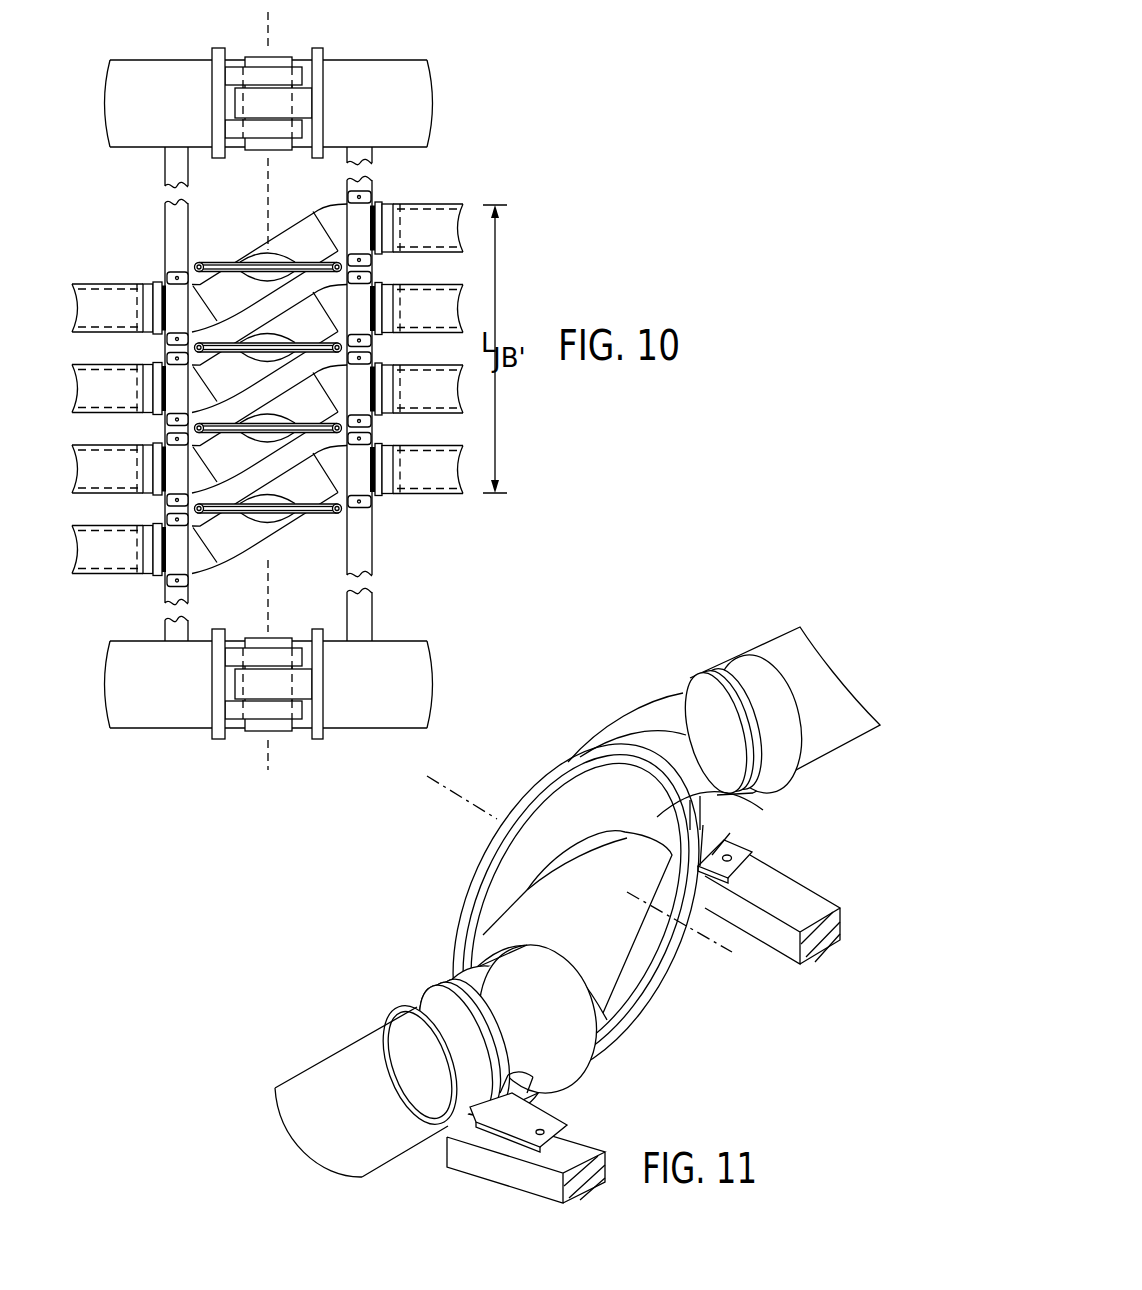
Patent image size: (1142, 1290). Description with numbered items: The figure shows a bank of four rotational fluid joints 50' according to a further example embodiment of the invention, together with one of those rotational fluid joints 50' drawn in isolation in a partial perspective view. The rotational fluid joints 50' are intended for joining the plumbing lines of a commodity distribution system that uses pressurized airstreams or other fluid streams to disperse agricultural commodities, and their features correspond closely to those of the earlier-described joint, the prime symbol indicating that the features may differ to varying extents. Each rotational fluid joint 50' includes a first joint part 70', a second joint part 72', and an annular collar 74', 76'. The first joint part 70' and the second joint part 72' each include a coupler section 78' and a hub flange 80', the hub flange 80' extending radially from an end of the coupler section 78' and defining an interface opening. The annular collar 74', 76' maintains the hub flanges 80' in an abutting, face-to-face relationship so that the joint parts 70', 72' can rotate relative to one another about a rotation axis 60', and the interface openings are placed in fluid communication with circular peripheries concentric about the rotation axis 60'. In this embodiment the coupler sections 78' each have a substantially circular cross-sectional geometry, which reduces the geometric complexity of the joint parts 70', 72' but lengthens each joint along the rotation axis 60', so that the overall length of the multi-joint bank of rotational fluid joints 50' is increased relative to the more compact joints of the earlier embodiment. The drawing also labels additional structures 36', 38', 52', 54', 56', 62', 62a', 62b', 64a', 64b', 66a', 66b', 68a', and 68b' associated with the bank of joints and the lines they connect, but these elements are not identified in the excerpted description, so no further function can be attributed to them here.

In FIG. 10, the first vertical support pipe 36' is at (145, 394).
In FIG. 10, the second vertical support pipe 38' is at (386, 394).
In FIG. 10, the rotational fluid joint 50' is at (268, 353).
In FIG. 11, the rotational fluid joint 50' is at (497, 925).
In FIG. 10, the diagonal crossover tube 52' is at (269, 308).
In FIG. 10, the diagonal crossover tube lower end 54' is at (269, 530).
In FIG. 10, the diagonal crossover tube 56' is at (269, 482).
In FIG. 10, the rotation axis 60' is at (238, 412).
In FIG. 11, the rotation axis 60' is at (579, 855).
In FIG. 10, the rail pipe 62' is at (283, 380).
In FIG. 11, the rail pipe 62' is at (810, 686).
In FIG. 10, the first pipe branch a 62a' is at (416, 228).
In FIG. 11, the first pipe branch a 62a' is at (770, 724).
In FIG. 10, the first pipe branch b 62b' is at (119, 308).
In FIG. 11, the first pipe branch b 62b' is at (375, 1086).
In FIG. 10, the second pipe branch a 64a' is at (416, 309).
In FIG. 10, the second pipe branch b 64b' is at (119, 389).
In FIG. 10, the third pipe branch a 66a' is at (416, 389).
In FIG. 10, the third pipe branch b 66b' is at (119, 469).
In FIG. 10, the fourth pipe branch a 68a' is at (416, 470).
In FIG. 10, the fourth pipe branch b 68b' is at (119, 550).
In FIG. 11, the first joint part 70' is at (627, 700).
In FIG. 11, the second joint part 72' is at (547, 1112).
In FIG. 11, the annular collar 74' is at (576, 906).
In FIG. 11, the annular collar 76' is at (576, 912).
In FIG. 11, the coupler section 78' is at (589, 872).
In FIG. 11, the hub flange 80' is at (728, 837).